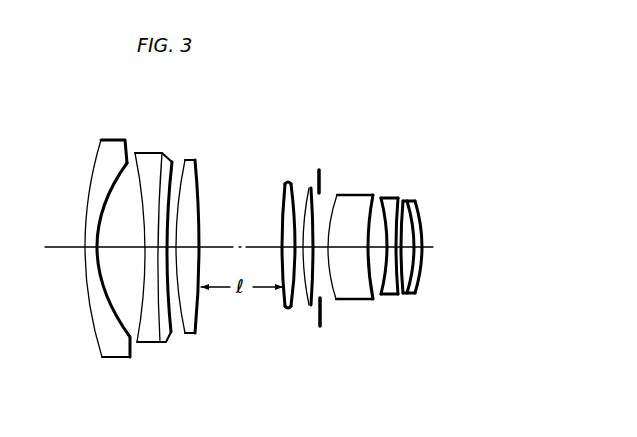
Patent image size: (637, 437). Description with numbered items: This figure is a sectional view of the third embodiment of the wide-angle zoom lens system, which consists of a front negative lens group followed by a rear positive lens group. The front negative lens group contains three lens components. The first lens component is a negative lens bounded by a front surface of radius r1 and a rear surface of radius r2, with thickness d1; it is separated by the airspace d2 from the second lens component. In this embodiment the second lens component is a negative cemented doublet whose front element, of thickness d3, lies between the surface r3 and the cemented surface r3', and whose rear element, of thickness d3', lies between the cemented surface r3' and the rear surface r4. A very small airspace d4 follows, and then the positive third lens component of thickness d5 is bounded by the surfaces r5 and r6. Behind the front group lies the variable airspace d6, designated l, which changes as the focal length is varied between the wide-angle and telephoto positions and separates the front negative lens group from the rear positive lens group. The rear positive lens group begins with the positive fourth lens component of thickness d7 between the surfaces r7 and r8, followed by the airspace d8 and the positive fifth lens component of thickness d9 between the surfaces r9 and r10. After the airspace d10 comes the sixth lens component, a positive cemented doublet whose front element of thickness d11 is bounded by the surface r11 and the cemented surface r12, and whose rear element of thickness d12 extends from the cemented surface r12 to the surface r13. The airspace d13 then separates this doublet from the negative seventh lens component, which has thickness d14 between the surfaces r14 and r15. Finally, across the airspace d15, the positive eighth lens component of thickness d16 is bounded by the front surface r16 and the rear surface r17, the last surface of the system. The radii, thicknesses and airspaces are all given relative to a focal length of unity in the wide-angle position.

The thickness of first lens component d1 is at (88, 247).
The airspace between first and second lens components d2 is at (122, 247).
The thickness of front element of second lens component d3 is at (155, 259).
The thickness of rear element of second lens component d3' is at (178, 250).
The airspace between second and third lens components d4 is at (175, 247).
The thickness of third lens component d5 is at (187, 247).
The variable airspace between front and rear lens groups d6 is at (215, 247).
The thickness of fourth lens component d7 is at (283, 245).
The airspace between fourth and fifth lens components d8 is at (298, 244).
The thickness of fifth lens component d9 is at (311, 190).
The airspace between fifth and sixth lens components d10 is at (318, 245).
The thickness of front element of sixth lens component d11 is at (340, 244).
The thickness of rear element of sixth lens component d12 is at (362, 245).
The airspace between sixth and seventh lens components d13 is at (377, 245).
The thickness of seventh lens component d14 is at (399, 244).
The airspace between seventh and eighth lens components d15 is at (413, 208).
The thickness of eighth lens component d16 is at (421, 245).
The radius of curvature of first lens surface r1 is at (102, 353).
The radius of curvature of second lens surface r2 is at (129, 340).
The radius of curvature of third lens surface r3 is at (144, 276).
The radius of curvature of cemented surface of second lens component r3' is at (170, 283).
The radius of curvature of fourth lens surface r4 is at (176, 322).
The radius of curvature of fifth lens surface r5 is at (186, 326).
The radius of curvature of sixth lens surface r6 is at (200, 306).
The radius of curvature of seventh lens surface r7 is at (290, 308).
The radius of curvature of eighth lens surface r8 is at (292, 308).
The radius of curvature of ninth lens surface r9 is at (308, 306).
The radius of curvature of tenth lens surface r10 is at (314, 304).
The radius of curvature of eleventh lens surface r11 is at (354, 290).
The radius of curvature of cemented surface of sixth lens component r12 is at (362, 300).
The radius of curvature of thirteenth lens surface r13 is at (382, 300).
The radius of curvature of fourteenth lens surface r14 is at (396, 298).
The radius of curvature of fifteenth lens surface r15 is at (406, 290).
The radius of curvature of sixteenth lens surface r16 is at (415, 278).
The radius of curvature of seventeenth lens surface r17 is at (424, 262).